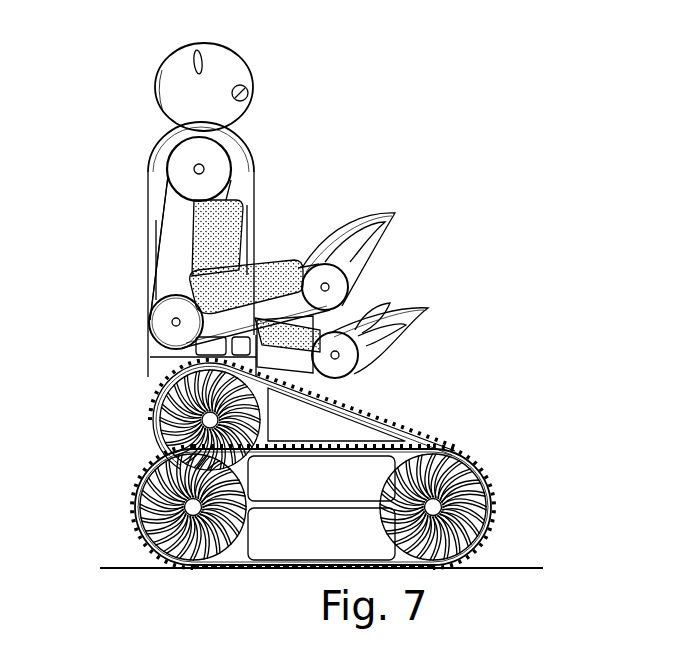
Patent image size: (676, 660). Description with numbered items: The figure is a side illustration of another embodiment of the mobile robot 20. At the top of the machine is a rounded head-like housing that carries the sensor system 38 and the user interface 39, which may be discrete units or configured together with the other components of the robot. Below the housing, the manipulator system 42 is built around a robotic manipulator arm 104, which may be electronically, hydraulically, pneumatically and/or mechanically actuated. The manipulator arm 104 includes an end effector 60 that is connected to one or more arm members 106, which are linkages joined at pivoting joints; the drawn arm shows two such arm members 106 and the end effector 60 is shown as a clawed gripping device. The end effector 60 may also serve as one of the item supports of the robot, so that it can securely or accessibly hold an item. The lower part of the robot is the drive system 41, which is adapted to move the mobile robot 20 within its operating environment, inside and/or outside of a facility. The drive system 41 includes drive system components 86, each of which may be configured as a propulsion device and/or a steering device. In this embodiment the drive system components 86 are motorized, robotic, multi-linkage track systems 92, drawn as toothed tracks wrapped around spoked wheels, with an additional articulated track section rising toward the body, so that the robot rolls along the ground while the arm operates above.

The mobile robot 20 is at (90, 70).
The sensor system 38 is at (256, 81).
The user interface 39 is at (266, 66).
The manipulator system 42 is at (430, 216).
The arm members 106 is at (149, 250).
The end effector 60 is at (386, 249).
The robotic manipulator arm 104 is at (148, 307).
The drive system 41 is at (447, 431).
The drive system components 86 is at (490, 507).
The track systems 92 is at (487, 478).